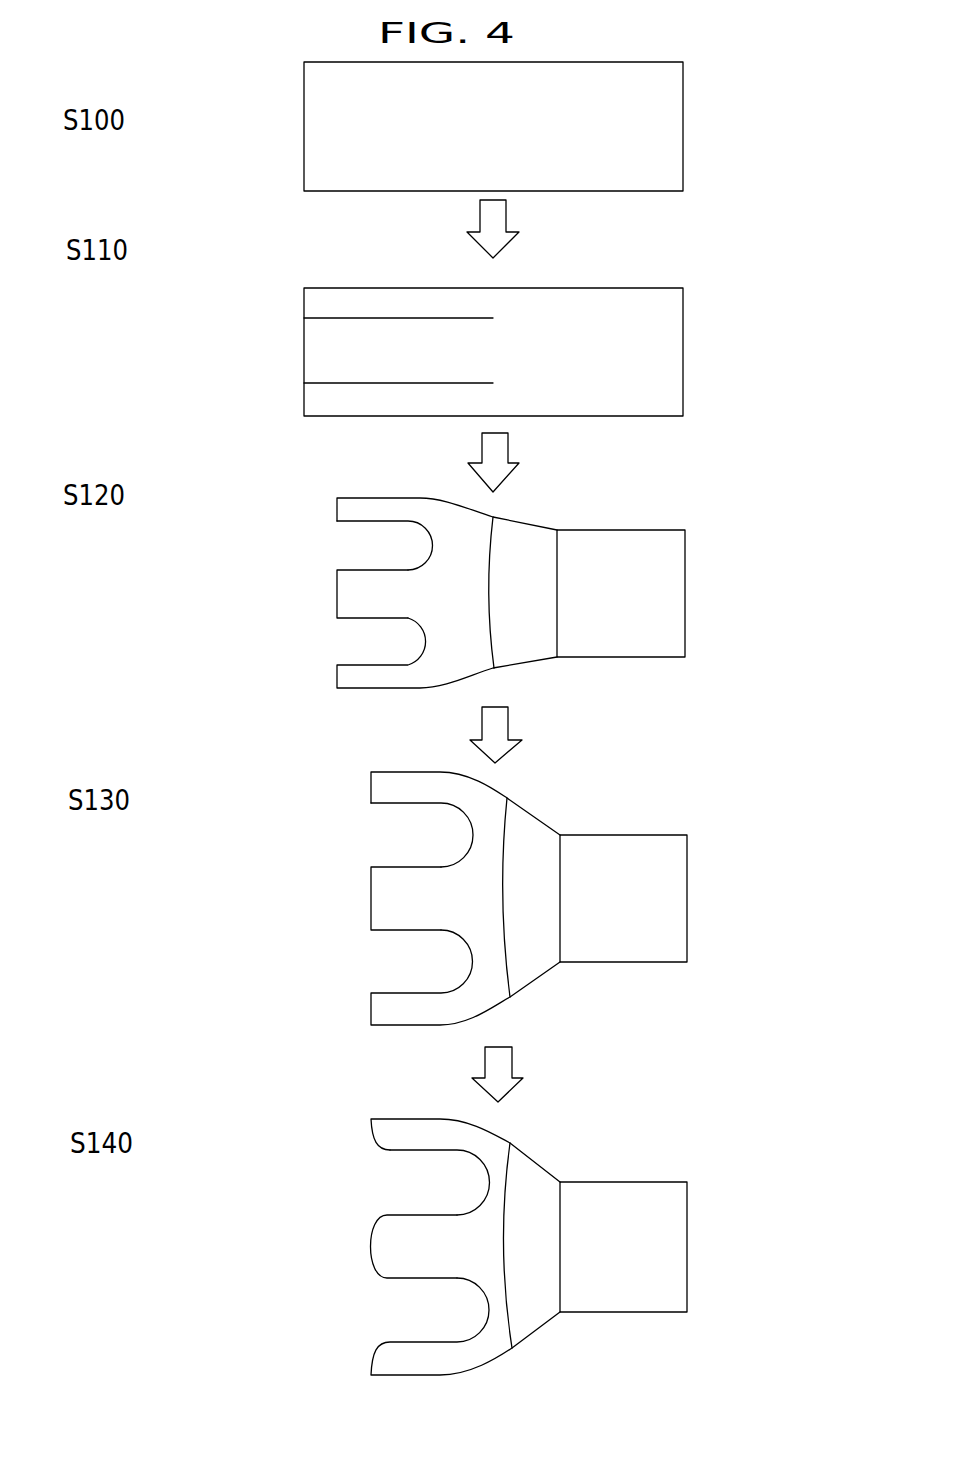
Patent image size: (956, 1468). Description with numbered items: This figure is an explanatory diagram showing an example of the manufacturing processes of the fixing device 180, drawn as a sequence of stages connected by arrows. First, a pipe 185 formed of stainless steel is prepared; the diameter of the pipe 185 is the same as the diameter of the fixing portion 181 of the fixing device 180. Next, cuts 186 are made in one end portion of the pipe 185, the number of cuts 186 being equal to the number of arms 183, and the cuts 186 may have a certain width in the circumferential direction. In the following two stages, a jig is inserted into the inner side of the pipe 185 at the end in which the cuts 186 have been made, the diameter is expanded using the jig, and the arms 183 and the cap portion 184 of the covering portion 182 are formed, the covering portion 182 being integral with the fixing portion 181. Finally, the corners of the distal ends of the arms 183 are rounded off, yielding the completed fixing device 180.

The fixing device 180 is at (725, 1167).
The fixing portion 181 is at (685, 597).
The covering portion 182 is at (361, 936).
The arms 183 is at (393, 598).
The cap portion 184 is at (497, 555).
The pipe 185 is at (683, 117).
The cuts 186 is at (330, 318).